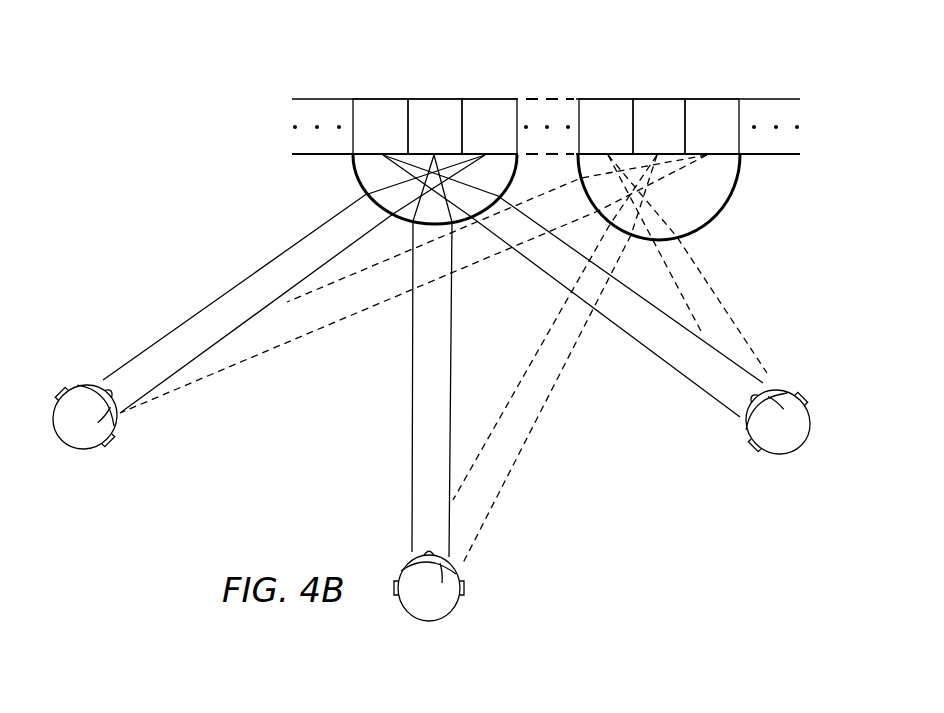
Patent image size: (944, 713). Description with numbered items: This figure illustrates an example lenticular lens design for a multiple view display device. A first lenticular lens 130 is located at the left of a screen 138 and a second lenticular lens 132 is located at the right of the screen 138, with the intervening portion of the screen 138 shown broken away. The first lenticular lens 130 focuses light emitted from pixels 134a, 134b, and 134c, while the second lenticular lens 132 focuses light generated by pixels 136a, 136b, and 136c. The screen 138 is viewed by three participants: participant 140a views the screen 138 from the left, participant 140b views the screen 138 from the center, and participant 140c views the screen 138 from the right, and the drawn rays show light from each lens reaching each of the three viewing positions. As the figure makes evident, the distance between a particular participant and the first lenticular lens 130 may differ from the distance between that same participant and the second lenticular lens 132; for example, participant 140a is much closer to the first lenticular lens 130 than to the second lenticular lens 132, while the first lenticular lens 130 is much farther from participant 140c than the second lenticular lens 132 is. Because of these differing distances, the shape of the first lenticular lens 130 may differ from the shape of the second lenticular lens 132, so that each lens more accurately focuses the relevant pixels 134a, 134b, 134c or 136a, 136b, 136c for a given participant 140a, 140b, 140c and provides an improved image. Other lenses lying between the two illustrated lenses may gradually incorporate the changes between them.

The first lenticular lens 130 is at (364, 211).
The second lenticular lens 132 is at (688, 246).
The pixel 134a is at (488, 99).
The pixel 134b is at (435, 99).
The pixel 134c is at (373, 99).
The pixel 136a is at (722, 99).
The pixel 136b is at (658, 99).
The pixel 136c is at (607, 99).
The screen 138 is at (545, 64).
The participant 140a is at (76, 450).
The participant 140b is at (464, 590).
The participant 140c is at (786, 455).